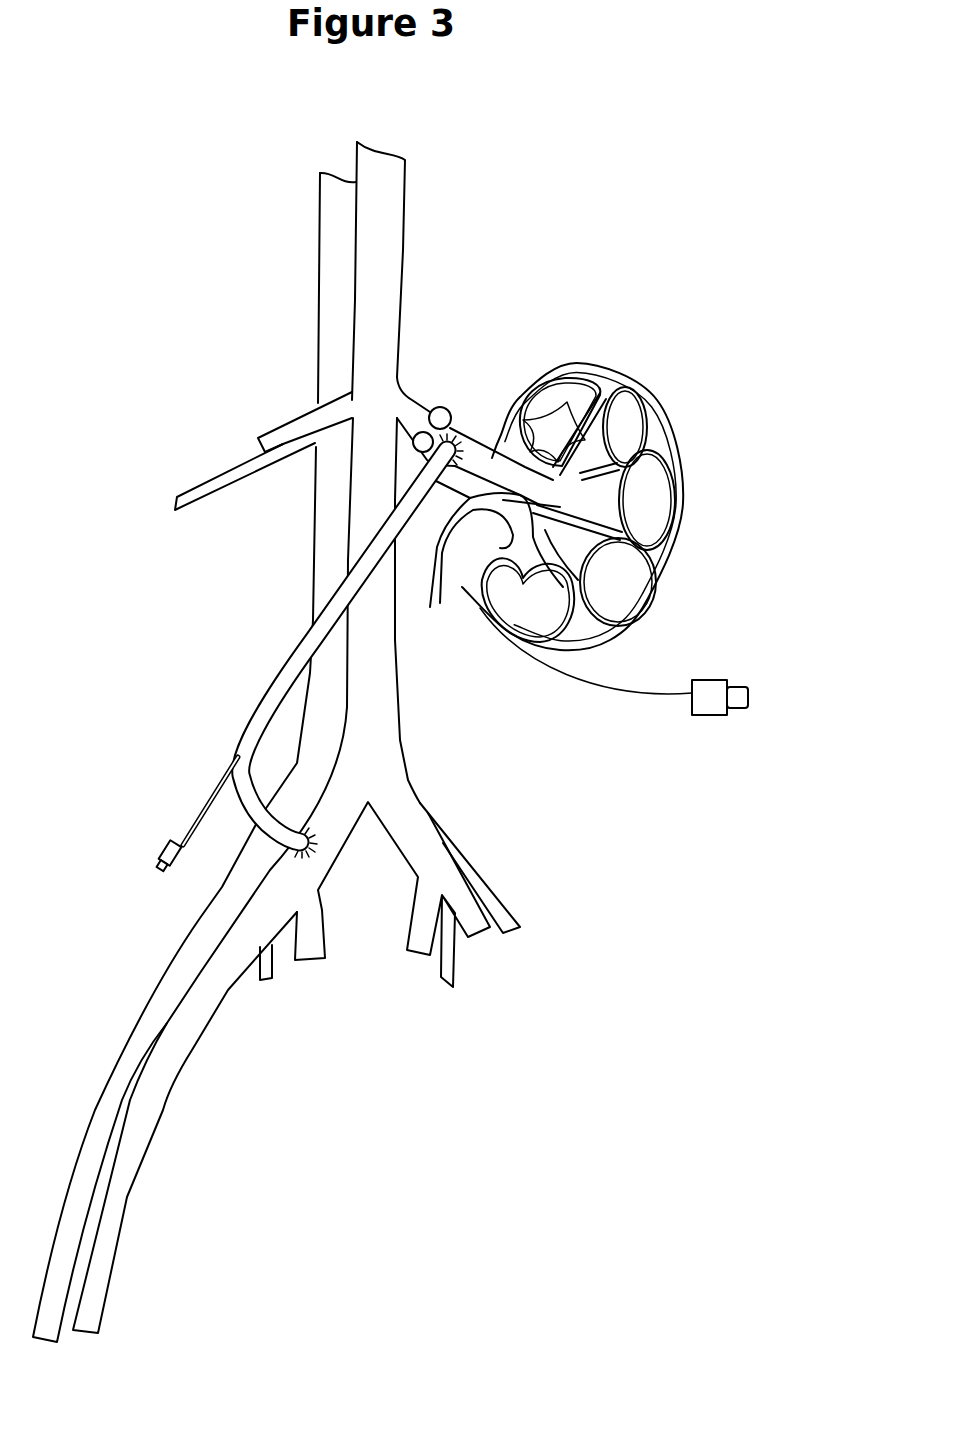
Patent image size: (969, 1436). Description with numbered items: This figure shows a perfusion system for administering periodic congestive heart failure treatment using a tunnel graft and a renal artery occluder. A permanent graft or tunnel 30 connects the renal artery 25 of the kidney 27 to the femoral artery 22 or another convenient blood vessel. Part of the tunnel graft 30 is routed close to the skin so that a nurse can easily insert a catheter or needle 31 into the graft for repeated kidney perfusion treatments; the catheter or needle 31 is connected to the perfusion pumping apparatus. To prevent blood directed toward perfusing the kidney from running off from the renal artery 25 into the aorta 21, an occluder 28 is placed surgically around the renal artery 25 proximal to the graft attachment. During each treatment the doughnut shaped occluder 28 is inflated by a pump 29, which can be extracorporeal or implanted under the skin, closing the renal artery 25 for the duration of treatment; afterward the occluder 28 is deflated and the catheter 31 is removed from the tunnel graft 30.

The aorta 21 is at (382, 323).
The femoral artery 22 is at (290, 878).
The renal artery 25 is at (477, 472).
The kidney 27 is at (652, 400).
The occluder 28 is at (442, 418).
The pump 29 is at (712, 697).
The tunnel graft 30 is at (315, 640).
The catheter or needle 31 is at (190, 815).